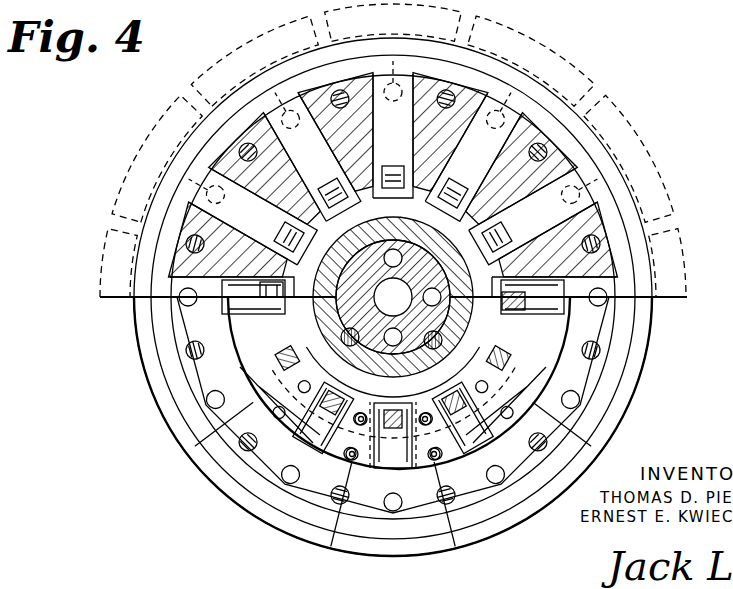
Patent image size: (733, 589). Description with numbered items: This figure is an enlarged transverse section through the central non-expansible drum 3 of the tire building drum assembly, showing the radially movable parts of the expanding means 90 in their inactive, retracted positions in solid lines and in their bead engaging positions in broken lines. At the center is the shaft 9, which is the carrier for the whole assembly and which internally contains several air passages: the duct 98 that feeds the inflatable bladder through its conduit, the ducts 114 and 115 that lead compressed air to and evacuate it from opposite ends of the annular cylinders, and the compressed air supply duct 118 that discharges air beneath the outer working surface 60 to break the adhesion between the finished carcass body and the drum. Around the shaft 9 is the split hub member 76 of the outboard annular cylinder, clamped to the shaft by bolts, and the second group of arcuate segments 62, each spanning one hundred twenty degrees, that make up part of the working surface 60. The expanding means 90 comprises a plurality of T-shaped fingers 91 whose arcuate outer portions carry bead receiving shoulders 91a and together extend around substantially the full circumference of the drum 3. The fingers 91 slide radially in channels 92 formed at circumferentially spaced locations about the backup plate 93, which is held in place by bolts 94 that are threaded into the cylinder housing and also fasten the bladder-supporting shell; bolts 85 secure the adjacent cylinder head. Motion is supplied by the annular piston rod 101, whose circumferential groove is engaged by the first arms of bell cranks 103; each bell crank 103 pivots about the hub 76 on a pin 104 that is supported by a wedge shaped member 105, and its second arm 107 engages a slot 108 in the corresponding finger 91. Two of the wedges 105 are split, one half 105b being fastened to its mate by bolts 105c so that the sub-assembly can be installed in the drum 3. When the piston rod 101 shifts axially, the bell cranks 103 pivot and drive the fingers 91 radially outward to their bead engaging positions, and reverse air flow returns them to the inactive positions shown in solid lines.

The central non-expansible drum 3 is at (130, 140).
The shaft 9 is at (340, 255).
The outer working surface 60 is at (202, 479).
The second group of arcuate segments 62 is at (140, 353).
The split hub member 76 is at (336, 262).
The bolts 85 is at (186, 300).
The expanding means 90 is at (663, 163).
The T-shaped fingers 91 is at (280, 225).
The bead receiving shoulders 91a is at (262, 66).
The channels 92 is at (265, 198).
The backup plate 93 is at (312, 55).
The bolts 94 is at (343, 95).
The duct 98 is at (404, 307).
The annular piston rod 101 is at (260, 290).
The bell cranks 103 is at (245, 372).
The pins 104 is at (258, 408).
The wedge shaped members 105 is at (230, 348).
The wedge half 105b is at (340, 400).
The bolts 105c is at (388, 412).
The second arm 107 is at (316, 338).
The slot 108 is at (298, 240).
The duct 114 is at (392, 250).
The duct 115 is at (393, 346).
The compressed air supply duct 118 is at (436, 290).